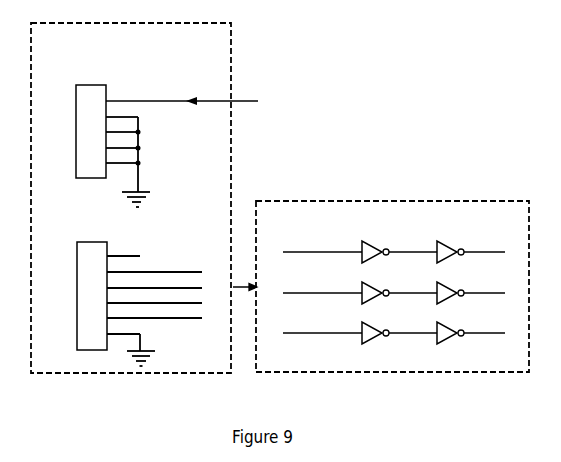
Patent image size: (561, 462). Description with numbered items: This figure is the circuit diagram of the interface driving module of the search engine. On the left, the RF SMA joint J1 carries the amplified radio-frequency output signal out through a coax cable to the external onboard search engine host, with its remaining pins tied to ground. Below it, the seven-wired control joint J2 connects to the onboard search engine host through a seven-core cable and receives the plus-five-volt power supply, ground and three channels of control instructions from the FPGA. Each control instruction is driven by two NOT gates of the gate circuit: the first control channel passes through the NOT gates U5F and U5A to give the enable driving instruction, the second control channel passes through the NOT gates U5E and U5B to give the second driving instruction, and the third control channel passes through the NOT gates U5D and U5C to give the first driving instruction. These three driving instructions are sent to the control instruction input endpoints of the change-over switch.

The RF SMA joint J1 is at (166, 139).
The 7-wired control joint J2 is at (139, 297).
The NOT gate U5F is at (360, 246).
The NOT gate U5A is at (471, 246).
The NOT gate U5E is at (360, 287).
The NOT gate U5B is at (471, 287).
The NOT gate U5D is at (360, 327).
The NOT gate U5C is at (471, 327).